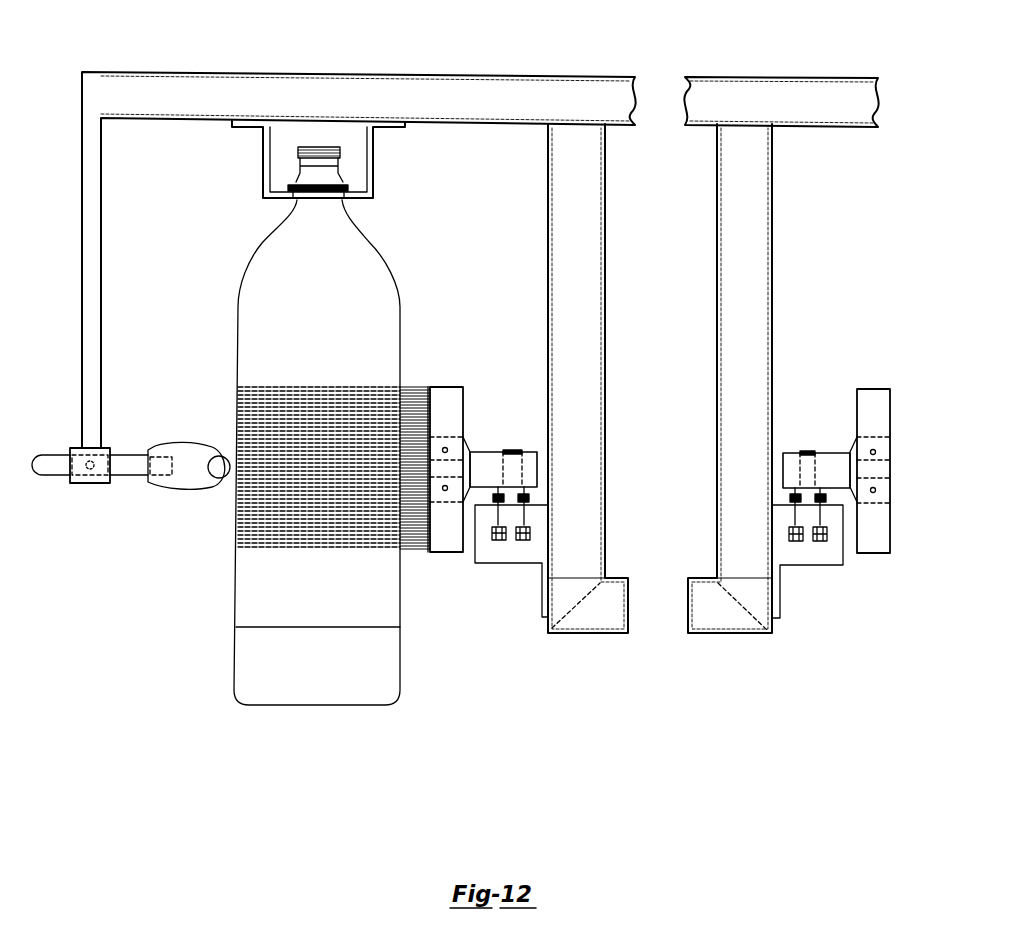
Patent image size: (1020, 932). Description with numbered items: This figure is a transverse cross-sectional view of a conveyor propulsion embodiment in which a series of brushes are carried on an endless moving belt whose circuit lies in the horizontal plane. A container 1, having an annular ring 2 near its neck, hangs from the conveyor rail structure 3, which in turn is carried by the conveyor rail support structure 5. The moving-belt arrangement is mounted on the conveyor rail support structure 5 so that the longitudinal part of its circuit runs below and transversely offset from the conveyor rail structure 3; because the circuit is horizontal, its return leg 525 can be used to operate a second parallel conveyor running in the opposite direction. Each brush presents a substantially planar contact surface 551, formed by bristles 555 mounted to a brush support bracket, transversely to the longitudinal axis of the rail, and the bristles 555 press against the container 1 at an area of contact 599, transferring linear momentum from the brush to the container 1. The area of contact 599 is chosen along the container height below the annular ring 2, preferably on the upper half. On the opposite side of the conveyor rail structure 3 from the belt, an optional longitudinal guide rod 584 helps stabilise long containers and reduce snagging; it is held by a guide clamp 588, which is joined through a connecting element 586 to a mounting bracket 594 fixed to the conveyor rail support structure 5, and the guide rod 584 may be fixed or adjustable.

The container 1 is at (258, 255).
The annular ring 2 is at (300, 187).
The conveyor rail structure 3 is at (372, 153).
The conveyor rail support structure 5 is at (700, 107).
The return leg 525 is at (843, 555).
The planar contact surface 551 is at (418, 400).
The bristles 555 is at (411, 396).
The longitudinal guide rod 584 is at (218, 478).
The connecting element 586 is at (130, 470).
The guide clamp 588 is at (192, 480).
The mounting bracket 594 is at (93, 484).
The area of contact 599 is at (283, 397).